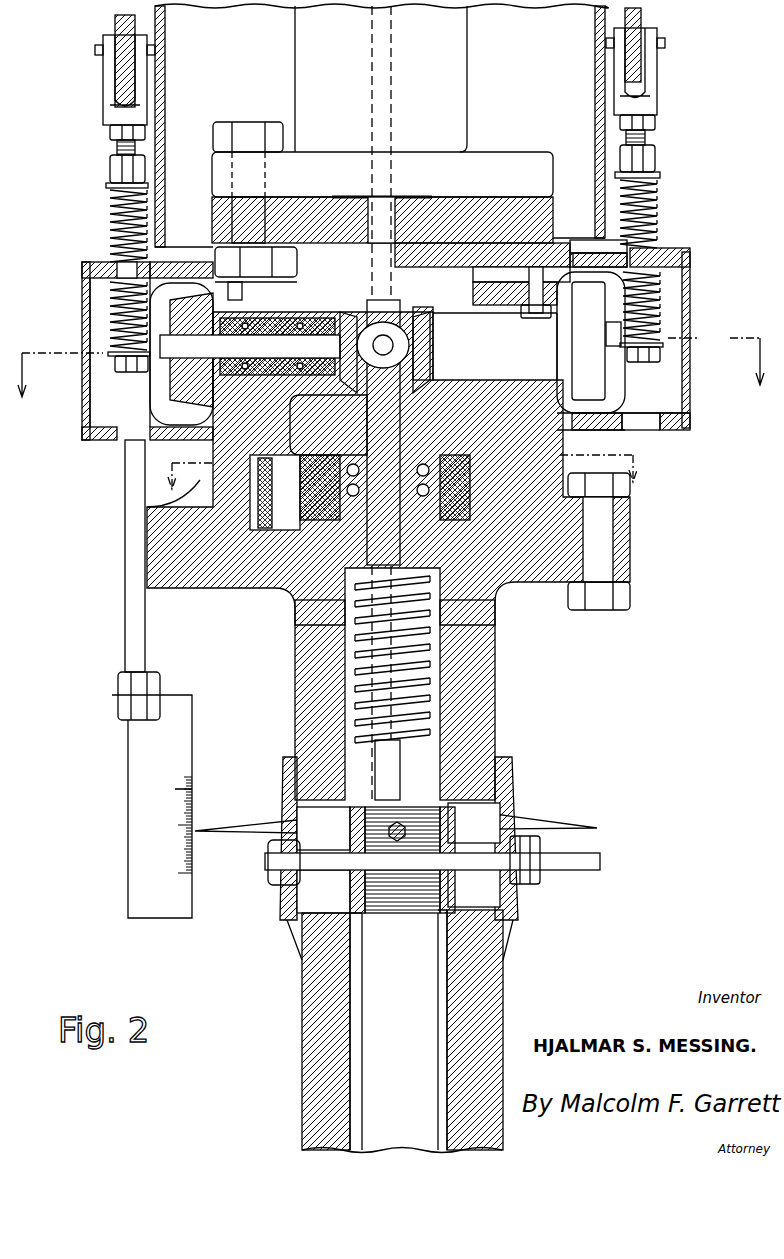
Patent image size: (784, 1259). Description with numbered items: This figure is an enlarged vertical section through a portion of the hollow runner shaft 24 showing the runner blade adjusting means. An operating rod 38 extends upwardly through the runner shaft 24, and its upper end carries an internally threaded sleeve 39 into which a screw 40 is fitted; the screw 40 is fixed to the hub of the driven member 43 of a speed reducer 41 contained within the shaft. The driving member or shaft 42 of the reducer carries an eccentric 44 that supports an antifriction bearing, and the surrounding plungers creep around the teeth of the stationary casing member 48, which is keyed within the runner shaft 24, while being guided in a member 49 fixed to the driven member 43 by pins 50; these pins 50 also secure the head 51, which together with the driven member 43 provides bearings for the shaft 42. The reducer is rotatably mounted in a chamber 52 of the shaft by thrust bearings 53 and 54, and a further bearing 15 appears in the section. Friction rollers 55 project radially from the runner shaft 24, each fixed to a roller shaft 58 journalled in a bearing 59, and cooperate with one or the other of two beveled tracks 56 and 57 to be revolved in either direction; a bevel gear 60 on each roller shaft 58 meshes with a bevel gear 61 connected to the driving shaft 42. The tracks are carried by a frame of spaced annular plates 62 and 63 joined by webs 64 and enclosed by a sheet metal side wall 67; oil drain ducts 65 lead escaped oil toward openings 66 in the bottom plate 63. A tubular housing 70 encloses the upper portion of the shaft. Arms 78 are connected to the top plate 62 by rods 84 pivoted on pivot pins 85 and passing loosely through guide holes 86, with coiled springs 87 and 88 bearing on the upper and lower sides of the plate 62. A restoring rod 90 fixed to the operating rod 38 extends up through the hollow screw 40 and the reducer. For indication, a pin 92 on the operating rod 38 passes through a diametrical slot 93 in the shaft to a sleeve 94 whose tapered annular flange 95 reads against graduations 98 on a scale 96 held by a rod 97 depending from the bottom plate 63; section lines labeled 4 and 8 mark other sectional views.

The section line 4- 4 is at (404, 466).
The section line 8- 8 is at (388, 356).
The bearing 15 is at (447, 480).
The runner shaft 24 is at (500, 992).
The operating rod 38 is at (398, 1030).
The internally threaded sleeve 39 is at (432, 670).
The screw 40 is at (425, 720).
The speed reducer 41 is at (450, 568).
The driving member or shaft 42 is at (462, 396).
The driven member 43 is at (395, 695).
The eccentric 44 is at (307, 567).
The stationary casing member 48 is at (245, 505).
The plunger guiding member 49 is at (273, 569).
The pins 50 is at (278, 458).
The head 51 is at (497, 402).
The chamber 52 is at (249, 559).
The thrust bearing 53 is at (478, 540).
The thrust bearing 54 is at (398, 420).
The friction rollers 55 is at (150, 428).
The track 56 is at (175, 262).
The track 57 is at (186, 446).
The roller shaft 58 is at (370, 322).
The bearing 59 is at (318, 316).
The bevel gear 60 is at (412, 324).
The bevel gear 61 is at (342, 384).
The top plate 62 is at (688, 258).
The bottom plate 63 is at (680, 430).
The webs 64 is at (668, 368).
The oil drain ducts 65 is at (150, 383).
The openings 66 is at (640, 430).
The sheet metal side wall 67 is at (660, 354).
The tubular housing 70 is at (165, 92).
The side members or arms 78 is at (115, 25).
The rods 84 is at (117, 148).
The pivot pins 85 is at (100, 55).
The guide holes 86 is at (100, 265).
The coiled spring 87 is at (112, 215).
The coiled spring 88 is at (112, 322).
The restoring rod 90 is at (396, 6).
The pin 92 is at (452, 866).
The diametrical slot 93 is at (398, 858).
The sleeve 94 is at (512, 782).
The annular flange 95 is at (196, 833).
The graduated scale 96 is at (190, 772).
The rod 97 is at (136, 640).
The graduations 98 is at (188, 862).